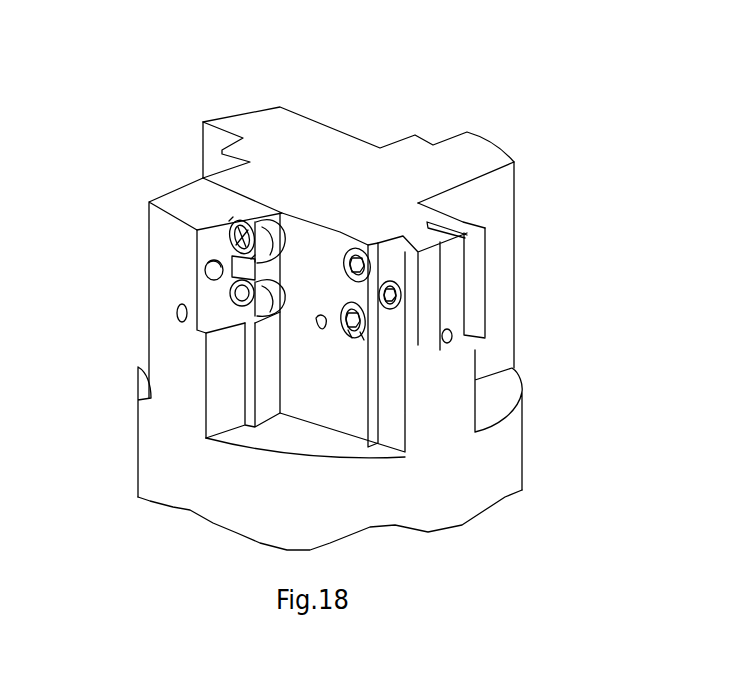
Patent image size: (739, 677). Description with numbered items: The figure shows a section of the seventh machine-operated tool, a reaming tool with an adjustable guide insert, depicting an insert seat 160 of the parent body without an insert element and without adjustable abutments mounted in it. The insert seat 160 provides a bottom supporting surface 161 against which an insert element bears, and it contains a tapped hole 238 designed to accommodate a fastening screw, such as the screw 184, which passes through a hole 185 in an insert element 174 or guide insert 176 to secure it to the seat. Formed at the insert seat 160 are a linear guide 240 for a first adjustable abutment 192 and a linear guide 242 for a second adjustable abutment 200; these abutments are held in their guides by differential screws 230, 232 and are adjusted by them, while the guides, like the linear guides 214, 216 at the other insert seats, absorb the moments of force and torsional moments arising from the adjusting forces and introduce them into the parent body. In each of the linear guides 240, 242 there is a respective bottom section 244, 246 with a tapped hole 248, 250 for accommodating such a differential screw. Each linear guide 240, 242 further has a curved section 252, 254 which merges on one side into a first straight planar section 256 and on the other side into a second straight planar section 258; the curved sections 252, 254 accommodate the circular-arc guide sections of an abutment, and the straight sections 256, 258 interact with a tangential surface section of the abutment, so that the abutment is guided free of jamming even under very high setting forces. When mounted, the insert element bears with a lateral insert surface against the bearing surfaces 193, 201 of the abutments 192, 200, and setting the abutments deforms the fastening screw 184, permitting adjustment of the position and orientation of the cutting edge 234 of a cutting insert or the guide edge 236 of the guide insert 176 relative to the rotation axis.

The linear guide 214 is at (344, 333).
The linear guide 216 is at (340, 256).
The differential screw 232 is at (351, 237).
The tapped hole 250 is at (240, 205).
The curved section 254 is at (217, 173).
The linear guide 242 is at (235, 222).
The insert seat 160 is at (212, 237).
The bottom supporting surface 161 is at (215, 246).
The bottom section 246 is at (230, 258).
The second straight planar section 258 is at (258, 265).
The tapped hole 238 is at (233, 270).
The linear guide 240 is at (232, 290).
The tapped hole 248 is at (225, 305).
The first straight planar section 256 is at (276, 305).
The curved section 252 is at (230, 320).
The bottom section 244 is at (258, 330).
The differential screw 230 is at (250, 343).
The second adjustable abutment 200 is at (365, 245).
The first adjustable abutment 192 is at (367, 346).
The bearing surface 193 is at (366, 337).
The bearing surface 201 is at (377, 244).
The screw 184 is at (390, 312).
The cutting edge 234 is at (460, 268).
The guide insert 176 is at (514, 186).
The insert element 174 is at (397, 238).
The guide edge 236 is at (487, 297).
The hole 185 is at (383, 343).